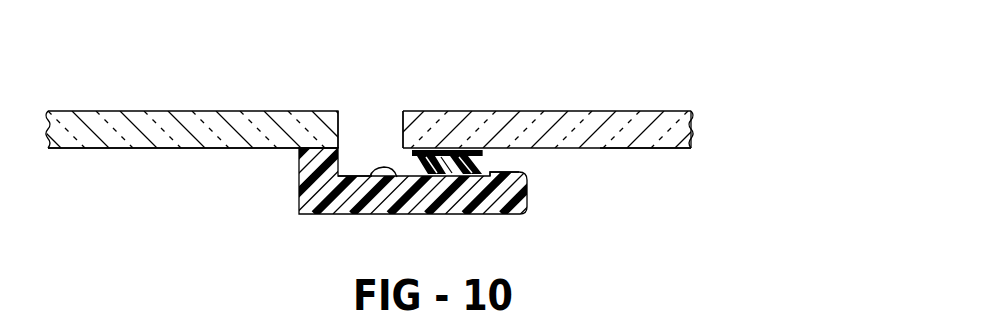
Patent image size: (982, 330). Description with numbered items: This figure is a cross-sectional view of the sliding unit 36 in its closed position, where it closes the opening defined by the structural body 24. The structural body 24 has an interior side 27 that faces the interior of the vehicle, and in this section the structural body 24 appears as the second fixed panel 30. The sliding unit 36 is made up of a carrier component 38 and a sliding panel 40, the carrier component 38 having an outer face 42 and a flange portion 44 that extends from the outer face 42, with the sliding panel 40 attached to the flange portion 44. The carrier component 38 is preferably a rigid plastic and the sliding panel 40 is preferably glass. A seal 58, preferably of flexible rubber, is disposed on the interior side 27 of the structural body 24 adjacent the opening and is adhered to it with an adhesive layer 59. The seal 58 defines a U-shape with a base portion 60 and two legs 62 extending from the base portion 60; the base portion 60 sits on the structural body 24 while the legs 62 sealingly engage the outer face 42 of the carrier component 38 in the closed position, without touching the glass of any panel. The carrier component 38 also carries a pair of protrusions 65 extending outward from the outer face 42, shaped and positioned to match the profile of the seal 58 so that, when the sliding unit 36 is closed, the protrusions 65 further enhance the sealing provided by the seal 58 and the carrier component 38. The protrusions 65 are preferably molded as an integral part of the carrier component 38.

The structural body 24 is at (711, 129).
The interior side 27 is at (678, 151).
The second fixed panel 30 is at (607, 111).
The sliding unit 36 is at (132, 163).
The carrier component 38 is at (442, 229).
The sliding panel 40 is at (72, 111).
The outer face 42 is at (352, 176).
The flange portion 44 is at (338, 148).
The seal 58 is at (493, 159).
The adhesive layer 59 is at (403, 165).
The base portion 60 is at (412, 157).
The legs 62 is at (426, 156).
The protrusions 65 is at (377, 172).